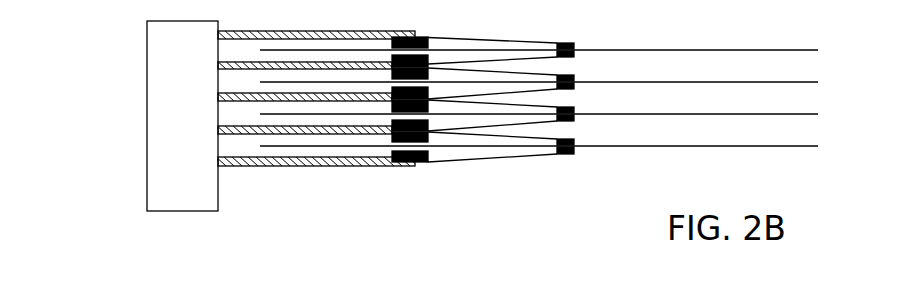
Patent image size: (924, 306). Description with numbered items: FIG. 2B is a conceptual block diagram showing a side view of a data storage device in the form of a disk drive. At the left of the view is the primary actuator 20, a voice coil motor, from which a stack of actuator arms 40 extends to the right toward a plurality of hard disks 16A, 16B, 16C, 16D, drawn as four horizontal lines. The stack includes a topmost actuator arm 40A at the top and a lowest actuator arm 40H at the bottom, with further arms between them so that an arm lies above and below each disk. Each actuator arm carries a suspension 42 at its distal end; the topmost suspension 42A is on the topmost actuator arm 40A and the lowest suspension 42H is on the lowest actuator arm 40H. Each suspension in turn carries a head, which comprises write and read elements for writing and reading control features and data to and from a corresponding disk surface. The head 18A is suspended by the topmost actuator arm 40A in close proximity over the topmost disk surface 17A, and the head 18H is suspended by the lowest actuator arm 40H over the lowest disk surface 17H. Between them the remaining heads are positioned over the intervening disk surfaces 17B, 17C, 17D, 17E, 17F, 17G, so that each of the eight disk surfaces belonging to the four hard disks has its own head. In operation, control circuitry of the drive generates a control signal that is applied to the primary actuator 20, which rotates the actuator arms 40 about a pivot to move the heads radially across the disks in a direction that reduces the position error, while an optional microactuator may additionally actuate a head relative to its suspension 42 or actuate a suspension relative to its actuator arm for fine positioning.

The primary actuator 20 is at (147, 57).
The actuator arms 40 is at (316, 124).
The topmost actuator arm 40A is at (333, 31).
The lowest actuator arm 40H is at (283, 167).
The suspension 42 is at (492, 124).
The topmost suspension 42A is at (517, 26).
The lowest suspension 42H is at (514, 170).
The head 18A is at (585, 33).
The head 18H is at (585, 164).
The disk surface 17A is at (722, 50).
The disk surface 17B is at (715, 52).
The disk surface 17C is at (730, 82).
The disk surface 17D is at (715, 84).
The disk surface 17E is at (717, 114).
The disk surface 17F is at (700, 116).
The disk surface 17G is at (720, 146).
The disk surface 17H is at (700, 148).
The hard disk 16A is at (832, 50).
The hard disk 16B is at (832, 82).
The hard disk 16C is at (832, 114).
The hard disk 16D is at (832, 146).